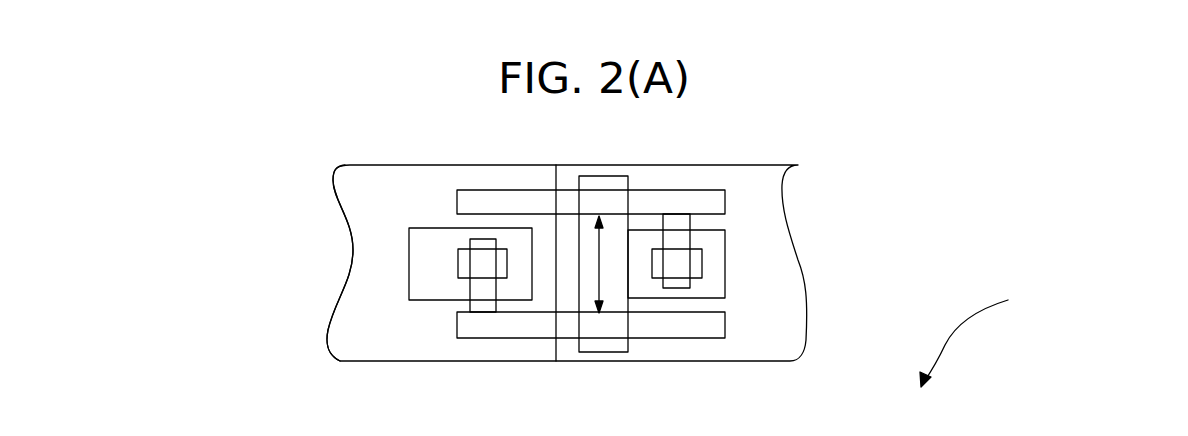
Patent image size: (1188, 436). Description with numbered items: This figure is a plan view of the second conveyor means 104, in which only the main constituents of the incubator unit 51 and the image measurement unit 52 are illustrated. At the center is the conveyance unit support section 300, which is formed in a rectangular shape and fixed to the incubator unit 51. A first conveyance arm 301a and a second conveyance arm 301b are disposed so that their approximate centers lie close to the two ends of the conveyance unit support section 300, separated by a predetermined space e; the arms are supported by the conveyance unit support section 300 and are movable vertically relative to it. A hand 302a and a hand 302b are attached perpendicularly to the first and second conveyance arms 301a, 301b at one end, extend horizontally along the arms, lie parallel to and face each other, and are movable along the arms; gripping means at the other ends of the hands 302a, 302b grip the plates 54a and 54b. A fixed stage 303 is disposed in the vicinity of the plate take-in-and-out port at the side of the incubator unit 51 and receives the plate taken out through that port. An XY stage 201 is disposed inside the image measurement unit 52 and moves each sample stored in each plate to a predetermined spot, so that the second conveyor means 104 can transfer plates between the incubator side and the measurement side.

The incubator unit 51 is at (786, 183).
The image measurement unit 52 is at (332, 189).
The XY stage 201 is at (435, 228).
The conveyance unit support section 300 is at (608, 176).
The first conveyance arm 301a is at (725, 205).
The second conveyance arm 301b is at (457, 325).
The hand 302a is at (688, 242).
The hand 302b is at (468, 288).
The plate 54a is at (457, 263).
The plate 54b is at (700, 265).
The fixed stage 303 is at (725, 298).
The second conveyor means 104 is at (1045, 333).
The predetermined space e is at (600, 268).